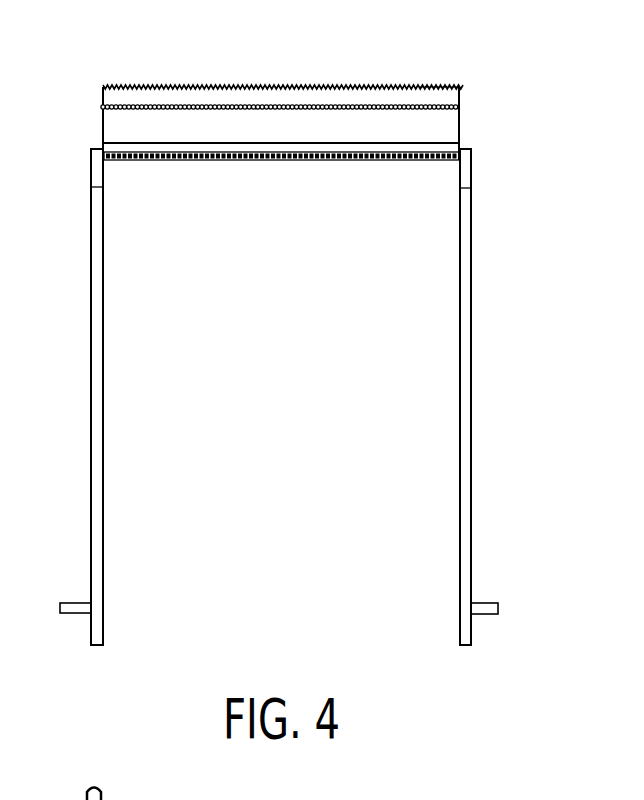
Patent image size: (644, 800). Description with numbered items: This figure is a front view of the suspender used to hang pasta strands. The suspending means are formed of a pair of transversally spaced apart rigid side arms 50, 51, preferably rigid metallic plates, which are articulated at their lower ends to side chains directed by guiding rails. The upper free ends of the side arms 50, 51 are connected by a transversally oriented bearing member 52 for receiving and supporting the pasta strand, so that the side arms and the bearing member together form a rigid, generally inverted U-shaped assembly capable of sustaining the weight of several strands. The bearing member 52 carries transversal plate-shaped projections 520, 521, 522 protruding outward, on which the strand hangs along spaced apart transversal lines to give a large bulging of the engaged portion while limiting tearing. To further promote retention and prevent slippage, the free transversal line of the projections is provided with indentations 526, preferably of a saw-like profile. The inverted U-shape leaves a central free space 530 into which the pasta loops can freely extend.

The side arm 50 is at (87, 515).
The side arm 51 is at (467, 363).
The bearing member 52 is at (317, 114).
The transversal plate-shaped projection 520 is at (342, 160).
The transversal plate-shaped projection 521 is at (442, 126).
The transversal plate-shaped projection 522 is at (437, 86).
The indentations 526 is at (217, 86).
The central free space 530 is at (412, 494).